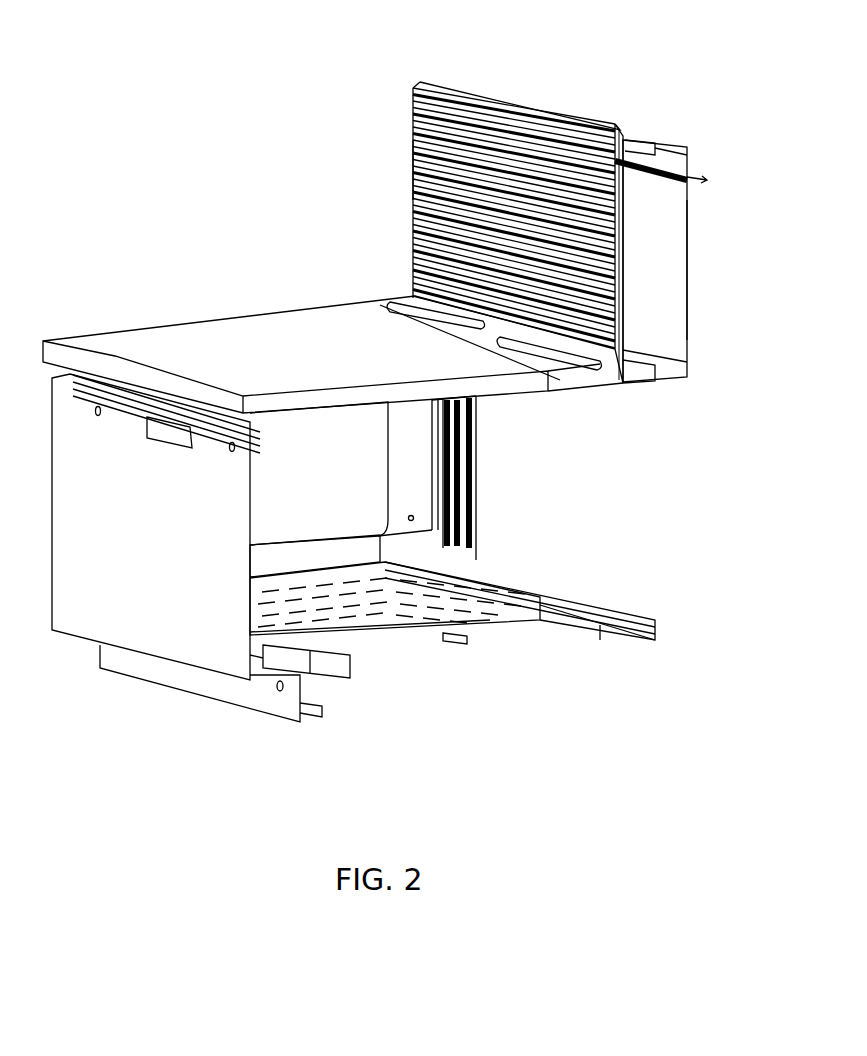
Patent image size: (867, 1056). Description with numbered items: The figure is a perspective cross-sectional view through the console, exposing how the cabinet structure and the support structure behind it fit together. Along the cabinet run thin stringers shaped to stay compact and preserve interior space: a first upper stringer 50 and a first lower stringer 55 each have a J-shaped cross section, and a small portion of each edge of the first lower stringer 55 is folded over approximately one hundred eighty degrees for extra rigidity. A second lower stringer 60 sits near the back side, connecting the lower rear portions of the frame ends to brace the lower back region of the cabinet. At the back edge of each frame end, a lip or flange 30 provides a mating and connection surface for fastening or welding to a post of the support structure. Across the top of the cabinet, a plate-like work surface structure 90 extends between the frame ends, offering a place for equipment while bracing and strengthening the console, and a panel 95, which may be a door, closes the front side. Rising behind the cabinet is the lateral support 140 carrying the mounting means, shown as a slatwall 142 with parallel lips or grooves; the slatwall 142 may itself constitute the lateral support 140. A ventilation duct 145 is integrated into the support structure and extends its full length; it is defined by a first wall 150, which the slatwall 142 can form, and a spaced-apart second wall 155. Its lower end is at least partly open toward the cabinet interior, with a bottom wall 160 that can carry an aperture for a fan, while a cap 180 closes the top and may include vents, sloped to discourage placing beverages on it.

The flange 30 is at (477, 450).
The first upper stringer 50 is at (280, 417).
The first lower stringer 55 is at (350, 665).
The second lower stringer 60 is at (607, 627).
The work surface structure 90 is at (240, 343).
The panel 95 is at (155, 534).
The lateral support 140 is at (460, 83).
The slatwall 142 is at (405, 163).
The ventilation duct 145 is at (655, 213).
The first wall 150 is at (626, 257).
The second wall 155 is at (690, 305).
The bottom wall 160 is at (668, 383).
The cap 180 is at (655, 143).